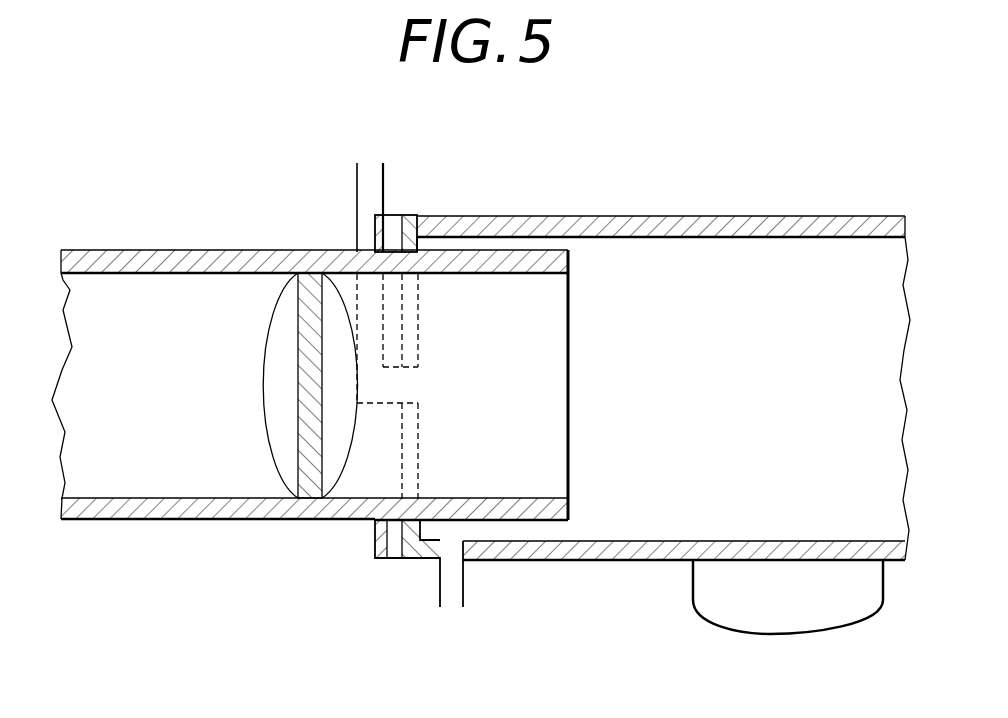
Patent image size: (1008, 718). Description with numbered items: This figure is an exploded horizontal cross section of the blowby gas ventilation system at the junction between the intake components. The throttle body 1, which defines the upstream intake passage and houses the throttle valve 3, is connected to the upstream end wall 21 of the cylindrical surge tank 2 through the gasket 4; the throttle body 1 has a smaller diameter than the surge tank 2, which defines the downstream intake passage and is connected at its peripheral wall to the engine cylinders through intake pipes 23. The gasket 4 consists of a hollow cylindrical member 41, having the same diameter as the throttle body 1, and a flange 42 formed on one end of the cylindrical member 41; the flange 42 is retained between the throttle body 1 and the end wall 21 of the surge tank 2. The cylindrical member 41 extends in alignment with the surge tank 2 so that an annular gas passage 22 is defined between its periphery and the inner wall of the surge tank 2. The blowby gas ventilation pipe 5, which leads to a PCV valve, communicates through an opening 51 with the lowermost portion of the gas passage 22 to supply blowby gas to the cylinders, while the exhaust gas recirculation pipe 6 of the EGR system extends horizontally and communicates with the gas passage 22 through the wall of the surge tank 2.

The throttle body 1 is at (140, 250).
The surge tank 2 is at (758, 216).
The throttle valve 3 is at (277, 318).
The gasket 4 is at (578, 280).
The blowby gas ventilation pipe 5 is at (364, 183).
The exhaust gas recirculation pipe 6 is at (452, 580).
The upstream end wall 21 is at (410, 227).
The annular gas passage 22 is at (475, 242).
The intake pipe 23 is at (712, 592).
The hollow cylindrical member 41 is at (525, 258).
The flange 42 is at (388, 228).
The opening 51 is at (388, 387).